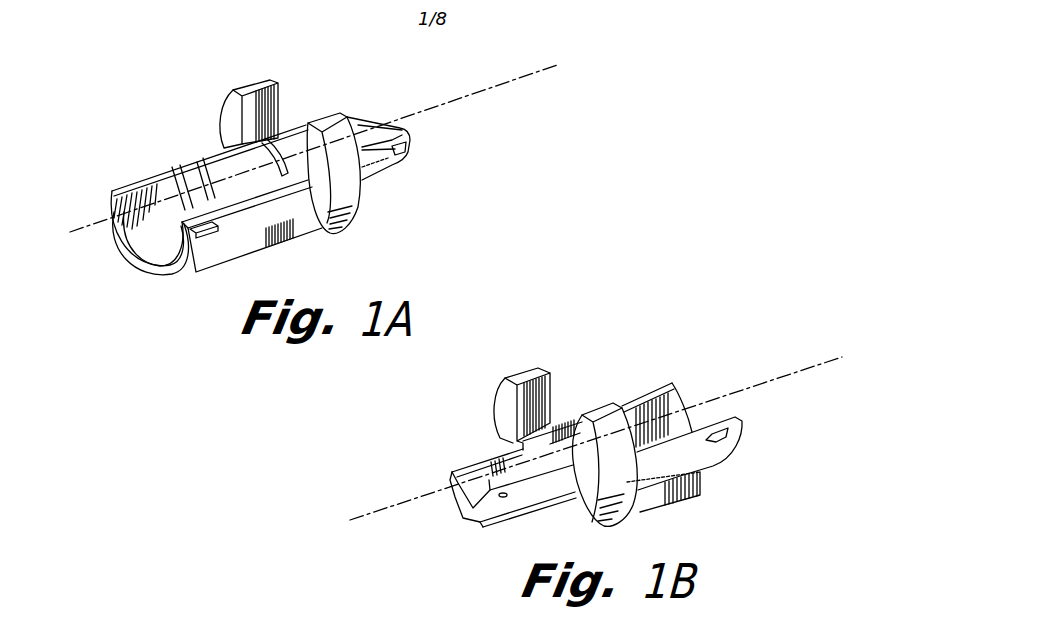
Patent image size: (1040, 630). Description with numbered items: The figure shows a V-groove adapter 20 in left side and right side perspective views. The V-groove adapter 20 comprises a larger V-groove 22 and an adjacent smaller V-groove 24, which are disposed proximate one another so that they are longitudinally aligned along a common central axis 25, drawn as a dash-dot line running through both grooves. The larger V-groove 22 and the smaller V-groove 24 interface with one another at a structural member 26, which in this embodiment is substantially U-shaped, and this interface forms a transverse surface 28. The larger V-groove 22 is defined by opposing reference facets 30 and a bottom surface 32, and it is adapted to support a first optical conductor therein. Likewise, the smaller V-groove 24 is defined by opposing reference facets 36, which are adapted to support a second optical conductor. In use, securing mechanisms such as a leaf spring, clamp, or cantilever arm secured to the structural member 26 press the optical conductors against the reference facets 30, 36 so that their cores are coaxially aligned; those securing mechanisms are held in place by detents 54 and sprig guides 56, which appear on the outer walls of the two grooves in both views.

In FIG. 1A, the V-groove adapter 20 is at (160, 55).
In FIG. 1B, the V-groove adapter 20 is at (687, 293).
In FIG. 1A, the larger V-groove 22 is at (116, 110).
In FIG. 1B, the larger V-groove 22 is at (660, 370).
In FIG. 1A, the smaller V-groove 24 is at (347, 83).
In FIG. 1B, the smaller V-groove 24 is at (456, 440).
In FIG. 1A, the common central axis 25 is at (470, 93).
In FIG. 1B, the common central axis 25 is at (790, 369).
In FIG. 1A, the structural member 26 is at (338, 243).
In FIG. 1B, the structural member 26 is at (546, 364).
In FIG. 1A, the transverse surface 28 is at (262, 163).
In FIG. 1A, the reference facets 30 is at (163, 182).
In FIG. 1B, the reference facets 30 is at (668, 397).
In FIG. 1A, the bottom surface 32 is at (120, 242).
In FIG. 1A, the reference facets 36 is at (363, 131).
In FIG. 1B, the reference facets 36 is at (470, 487).
In FIG. 1A, the detents 54 is at (218, 232).
In FIG. 1B, the detents 54 is at (717, 435).
In FIG. 1A, the sprig guides 56 is at (224, 262).
In FIG. 1B, the sprig guides 56 is at (514, 517).